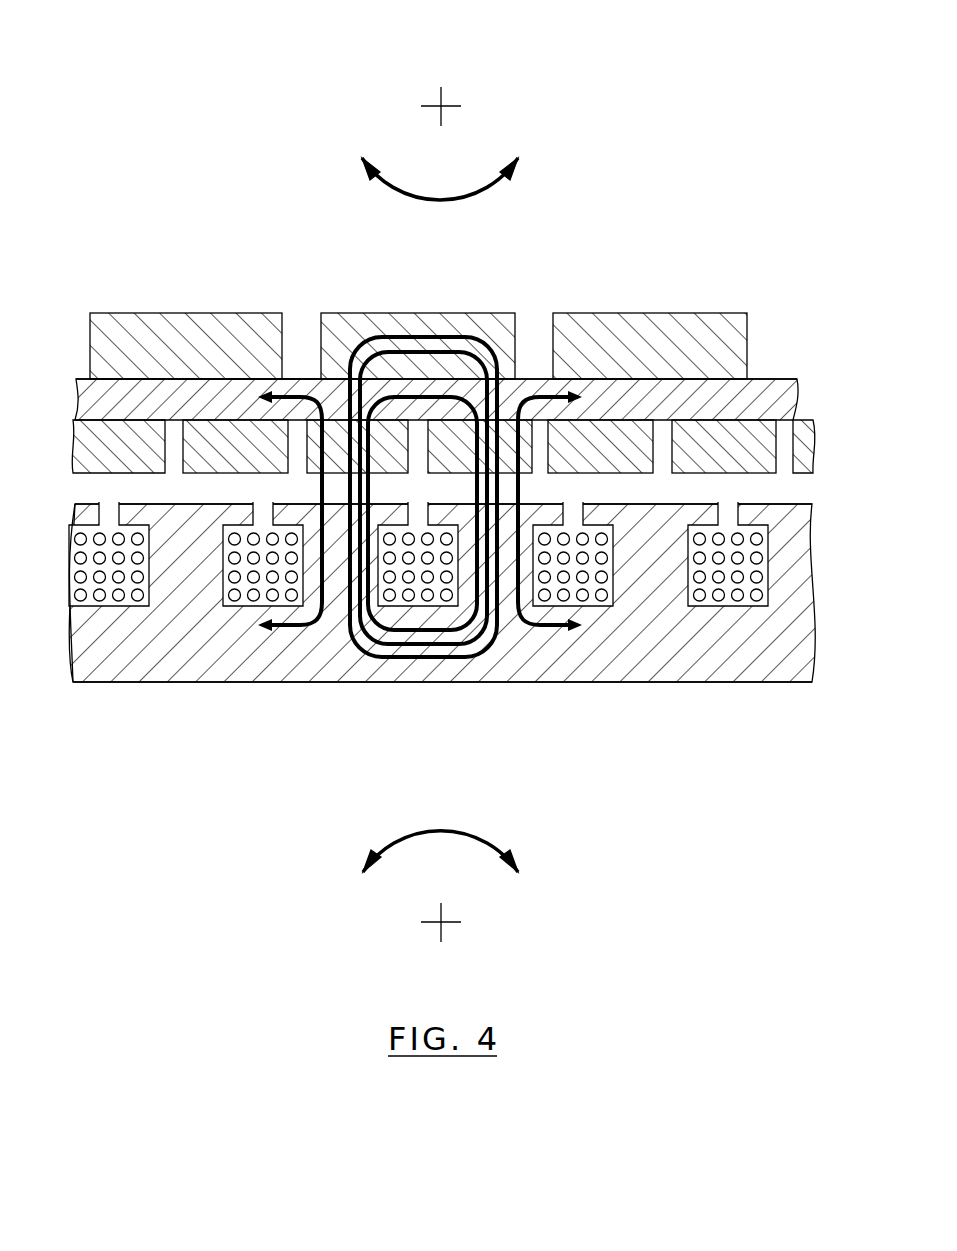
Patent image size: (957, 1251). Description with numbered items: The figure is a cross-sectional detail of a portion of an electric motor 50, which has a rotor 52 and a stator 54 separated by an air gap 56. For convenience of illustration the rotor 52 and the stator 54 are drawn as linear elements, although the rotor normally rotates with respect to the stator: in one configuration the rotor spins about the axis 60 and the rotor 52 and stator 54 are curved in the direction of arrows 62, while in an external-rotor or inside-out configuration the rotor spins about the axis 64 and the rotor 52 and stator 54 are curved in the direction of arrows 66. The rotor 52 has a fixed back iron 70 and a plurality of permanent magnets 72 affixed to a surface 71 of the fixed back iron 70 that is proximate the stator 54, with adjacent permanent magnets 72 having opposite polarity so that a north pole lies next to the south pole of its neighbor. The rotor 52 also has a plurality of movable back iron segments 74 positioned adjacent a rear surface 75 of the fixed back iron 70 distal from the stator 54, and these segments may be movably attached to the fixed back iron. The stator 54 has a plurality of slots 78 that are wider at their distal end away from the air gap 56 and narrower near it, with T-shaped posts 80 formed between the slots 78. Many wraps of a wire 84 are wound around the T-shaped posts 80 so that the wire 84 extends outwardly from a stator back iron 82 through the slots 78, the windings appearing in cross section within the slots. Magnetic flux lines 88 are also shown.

The electric motor 50 is at (740, 221).
The rotor 52 is at (296, 368).
The stator 54 is at (217, 670).
The air gap 56 is at (798, 490).
The axis 60 is at (443, 100).
The arrows 62 is at (460, 197).
The axis 64 is at (444, 925).
The arrows 66 is at (456, 827).
The fixed back iron 70 is at (225, 407).
The surface 71 is at (90, 378).
The permanent magnets 72 is at (73, 440).
The movable back iron segments 74 is at (145, 312).
The rear surface 75 is at (115, 378).
The slots 78 is at (95, 596).
The T-shaped posts 80 is at (136, 513).
The stator back iron 82 is at (516, 646).
The wire 84 is at (138, 598).
The magnetic flux lines 88 is at (612, 400).